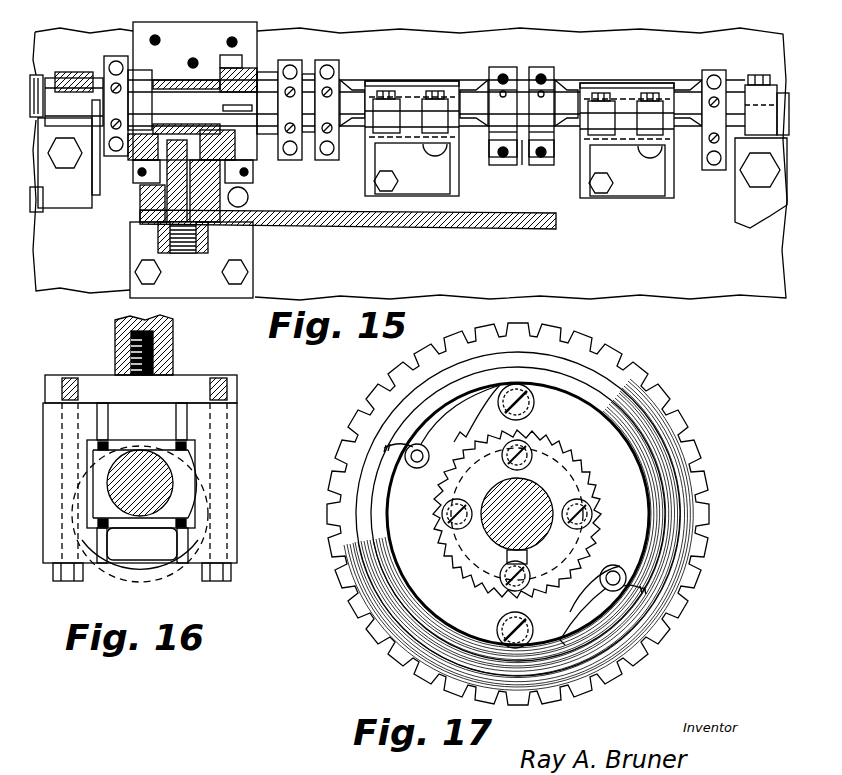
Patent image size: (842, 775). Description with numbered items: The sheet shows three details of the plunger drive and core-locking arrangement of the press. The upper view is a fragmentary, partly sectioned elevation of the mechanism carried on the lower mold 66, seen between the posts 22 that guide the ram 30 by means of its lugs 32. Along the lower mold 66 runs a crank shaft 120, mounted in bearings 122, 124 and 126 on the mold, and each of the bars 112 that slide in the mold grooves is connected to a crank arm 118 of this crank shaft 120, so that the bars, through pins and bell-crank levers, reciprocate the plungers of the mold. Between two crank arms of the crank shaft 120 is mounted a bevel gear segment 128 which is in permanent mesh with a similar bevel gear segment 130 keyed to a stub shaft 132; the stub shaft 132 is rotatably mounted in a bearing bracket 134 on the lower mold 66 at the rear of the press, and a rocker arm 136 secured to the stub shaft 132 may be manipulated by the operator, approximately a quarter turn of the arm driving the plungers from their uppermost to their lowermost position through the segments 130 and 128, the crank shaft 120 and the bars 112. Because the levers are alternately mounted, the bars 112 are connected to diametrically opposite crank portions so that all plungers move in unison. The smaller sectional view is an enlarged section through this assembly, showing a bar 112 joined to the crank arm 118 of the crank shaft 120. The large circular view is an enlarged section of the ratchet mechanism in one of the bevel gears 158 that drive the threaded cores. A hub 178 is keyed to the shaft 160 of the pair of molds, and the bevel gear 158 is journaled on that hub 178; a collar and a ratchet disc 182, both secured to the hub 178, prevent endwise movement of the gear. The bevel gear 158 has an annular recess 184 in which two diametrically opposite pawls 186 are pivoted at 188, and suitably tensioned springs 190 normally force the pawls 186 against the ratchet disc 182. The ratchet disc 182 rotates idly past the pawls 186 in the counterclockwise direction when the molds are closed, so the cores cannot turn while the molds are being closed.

In FIG. 15, the posts 22 is at (780, 240).
In FIG. 15, the ram 30 is at (677, 292).
In FIG. 15, the lugs 32 is at (88, 180).
In FIG. 15, the lower mold 66 is at (311, 32).
In FIG. 16, the bars 112 is at (172, 352).
In FIG. 15, the crank arm 118 is at (520, 182).
In FIG. 16, the crank arm 118 is at (146, 468).
In FIG. 15, the crank shaft 120 is at (487, 78).
In FIG. 16, the crank shaft 120 is at (168, 578).
In FIG. 15, the bearing 122 is at (83, 97).
In FIG. 15, the bearing 124 is at (408, 82).
In FIG. 15, the bearing 126 is at (770, 92).
In FIG. 15, the bevel gear segment 128 is at (237, 162).
In FIG. 15, the bevel gear segment 130 is at (232, 180).
In FIG. 15, the stub shaft 132 is at (172, 205).
In FIG. 15, the bearing bracket 134 is at (240, 248).
In FIG. 15, the rocker arm 136 is at (478, 232).
In FIG. 17, the bevel gear 158 is at (655, 388).
In FIG. 17, the shaft 160 is at (530, 498).
In FIG. 17, the hub 178 is at (458, 585).
In FIG. 17, the ratchet disc 182 is at (580, 462).
In FIG. 17, the annular recess 184 is at (642, 487).
In FIG. 17, the pawls 186 is at (470, 418).
In FIG. 17, the pawl pivots 188 is at (537, 405).
In FIG. 17, the springs 190 is at (437, 466).